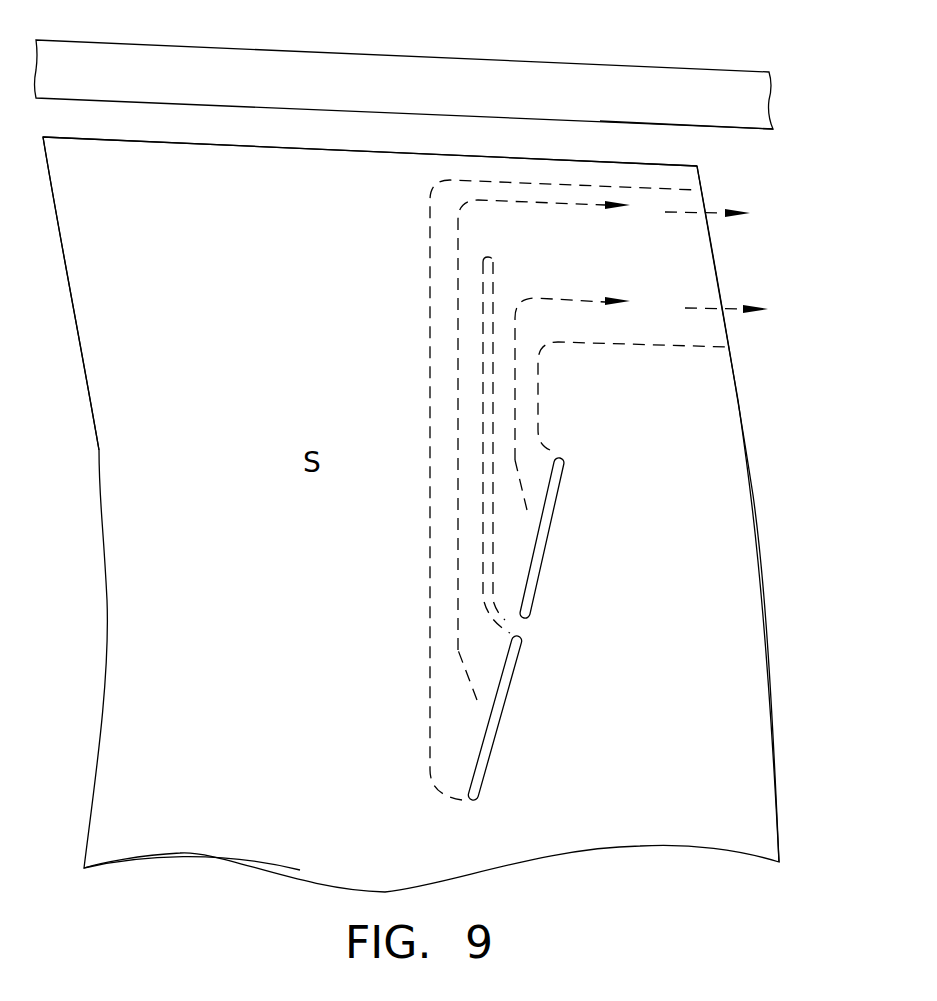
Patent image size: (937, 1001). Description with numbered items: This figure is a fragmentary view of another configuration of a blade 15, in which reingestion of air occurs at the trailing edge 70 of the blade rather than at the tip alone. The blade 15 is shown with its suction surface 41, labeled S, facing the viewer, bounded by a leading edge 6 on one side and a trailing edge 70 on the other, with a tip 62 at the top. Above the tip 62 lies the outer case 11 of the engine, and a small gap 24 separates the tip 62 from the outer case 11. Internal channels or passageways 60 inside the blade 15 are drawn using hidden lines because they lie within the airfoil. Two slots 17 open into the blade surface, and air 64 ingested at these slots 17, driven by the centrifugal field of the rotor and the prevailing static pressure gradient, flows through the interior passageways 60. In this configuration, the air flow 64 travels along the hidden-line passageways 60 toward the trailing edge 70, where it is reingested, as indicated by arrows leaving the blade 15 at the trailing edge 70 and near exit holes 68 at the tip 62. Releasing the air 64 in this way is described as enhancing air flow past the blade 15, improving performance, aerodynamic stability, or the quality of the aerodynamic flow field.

The leading edge 6 is at (103, 703).
The outer case 11 is at (299, 50).
The blade 15 is at (366, 853).
The slots 17 is at (537, 590).
The gap 24 is at (693, 150).
The suction surface 41 is at (138, 463).
The internal passageways 60 is at (517, 545).
The tip 62 is at (215, 143).
The air 64 is at (458, 316).
The exit holes 68 is at (718, 258).
The trailing edge 70 is at (755, 495).